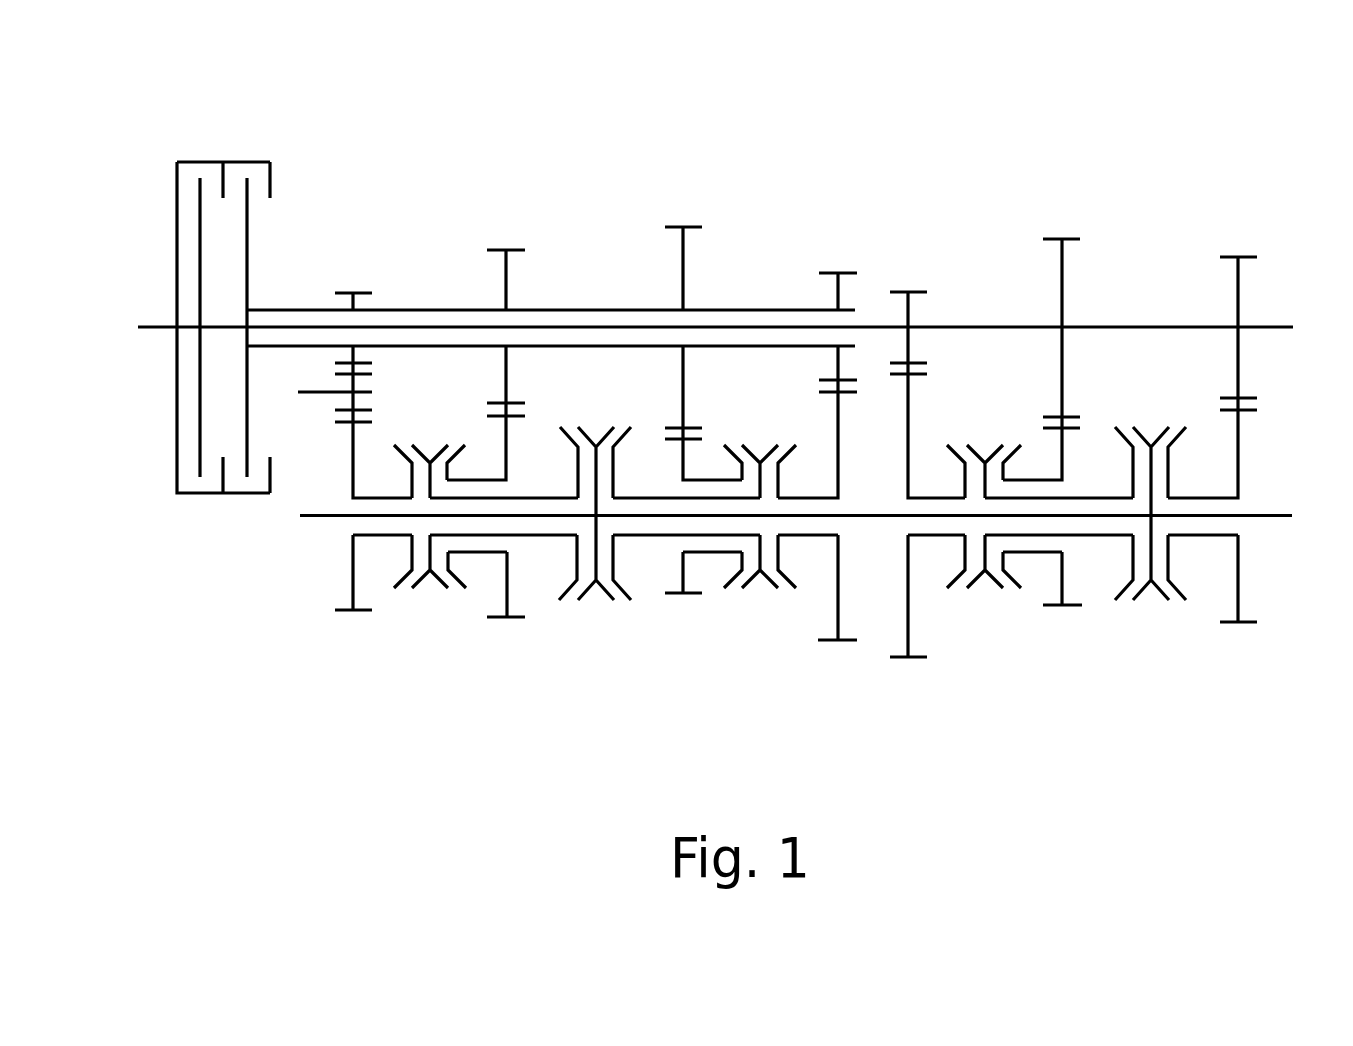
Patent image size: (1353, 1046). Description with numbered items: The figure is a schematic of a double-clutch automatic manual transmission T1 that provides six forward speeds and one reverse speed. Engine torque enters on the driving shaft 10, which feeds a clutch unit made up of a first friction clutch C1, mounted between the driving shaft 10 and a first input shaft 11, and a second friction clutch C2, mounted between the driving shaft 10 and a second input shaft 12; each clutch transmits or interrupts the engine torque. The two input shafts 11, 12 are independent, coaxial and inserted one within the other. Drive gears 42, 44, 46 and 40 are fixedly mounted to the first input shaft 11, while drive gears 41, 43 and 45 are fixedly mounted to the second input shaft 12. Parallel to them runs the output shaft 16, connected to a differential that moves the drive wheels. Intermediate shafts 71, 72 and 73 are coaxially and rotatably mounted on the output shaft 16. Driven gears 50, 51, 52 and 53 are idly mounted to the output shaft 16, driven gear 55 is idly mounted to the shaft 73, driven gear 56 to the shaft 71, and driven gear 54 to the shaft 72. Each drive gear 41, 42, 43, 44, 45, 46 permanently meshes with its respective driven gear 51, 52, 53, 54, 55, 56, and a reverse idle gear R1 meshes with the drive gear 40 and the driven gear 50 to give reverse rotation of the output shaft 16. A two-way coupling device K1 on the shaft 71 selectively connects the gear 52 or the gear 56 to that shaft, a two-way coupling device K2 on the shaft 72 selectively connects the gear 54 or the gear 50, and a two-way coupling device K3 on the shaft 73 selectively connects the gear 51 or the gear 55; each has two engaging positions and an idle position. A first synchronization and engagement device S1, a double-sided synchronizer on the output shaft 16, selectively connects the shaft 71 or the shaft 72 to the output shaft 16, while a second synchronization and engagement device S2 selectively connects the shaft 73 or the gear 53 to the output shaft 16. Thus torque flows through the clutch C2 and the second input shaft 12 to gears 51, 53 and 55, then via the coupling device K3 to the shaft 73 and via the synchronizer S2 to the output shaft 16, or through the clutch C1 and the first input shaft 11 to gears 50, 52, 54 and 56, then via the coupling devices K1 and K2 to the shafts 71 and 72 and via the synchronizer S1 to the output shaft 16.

The automatic manual transmission T1 is at (196, 664).
The driving shaft 10 is at (162, 322).
The first input shaft 11 is at (650, 308).
The second input shaft 12 is at (1283, 324).
The output shaft 16 is at (1282, 518).
The first friction clutch C1 is at (258, 173).
The second friction clutch C2 is at (188, 173).
The reverse idle gear R1 is at (340, 407).
The drive gear 40 is at (346, 290).
The drive gear 41 is at (918, 290).
The drive gear 42 is at (827, 273).
The drive gear 43 is at (1252, 253).
The drive gear 44 is at (495, 248).
The drive gear 45 is at (1073, 237).
The drive gear 46 is at (673, 225).
The driven gear 50 is at (340, 613).
The driven gear 51 is at (890, 658).
The driven gear 52 is at (850, 643).
The driven gear 53 is at (1250, 625).
The driven gear 54 is at (518, 620).
The driven gear 55 is at (1072, 608).
The driven gear 56 is at (670, 597).
The intermediate shaft 71 is at (660, 467).
The intermediate shaft 72 is at (520, 497).
The intermediate shaft 73 is at (1075, 497).
The two-way coupling device K1 is at (761, 605).
The two-way coupling device K2 is at (430, 604).
The two-way coupling device K3 is at (985, 605).
The first synchronization and engagement device S1 is at (596, 617).
The second synchronization and engagement device S2 is at (1150, 617).